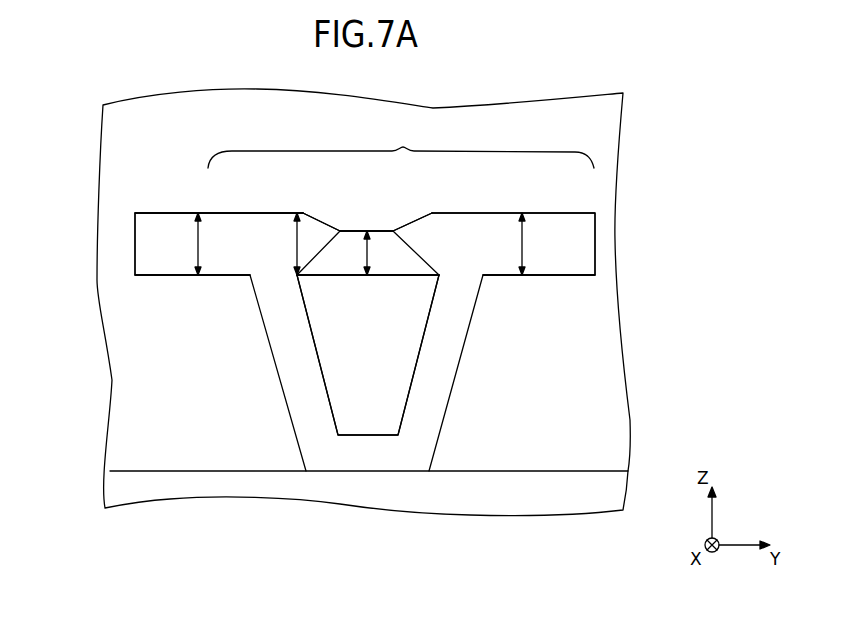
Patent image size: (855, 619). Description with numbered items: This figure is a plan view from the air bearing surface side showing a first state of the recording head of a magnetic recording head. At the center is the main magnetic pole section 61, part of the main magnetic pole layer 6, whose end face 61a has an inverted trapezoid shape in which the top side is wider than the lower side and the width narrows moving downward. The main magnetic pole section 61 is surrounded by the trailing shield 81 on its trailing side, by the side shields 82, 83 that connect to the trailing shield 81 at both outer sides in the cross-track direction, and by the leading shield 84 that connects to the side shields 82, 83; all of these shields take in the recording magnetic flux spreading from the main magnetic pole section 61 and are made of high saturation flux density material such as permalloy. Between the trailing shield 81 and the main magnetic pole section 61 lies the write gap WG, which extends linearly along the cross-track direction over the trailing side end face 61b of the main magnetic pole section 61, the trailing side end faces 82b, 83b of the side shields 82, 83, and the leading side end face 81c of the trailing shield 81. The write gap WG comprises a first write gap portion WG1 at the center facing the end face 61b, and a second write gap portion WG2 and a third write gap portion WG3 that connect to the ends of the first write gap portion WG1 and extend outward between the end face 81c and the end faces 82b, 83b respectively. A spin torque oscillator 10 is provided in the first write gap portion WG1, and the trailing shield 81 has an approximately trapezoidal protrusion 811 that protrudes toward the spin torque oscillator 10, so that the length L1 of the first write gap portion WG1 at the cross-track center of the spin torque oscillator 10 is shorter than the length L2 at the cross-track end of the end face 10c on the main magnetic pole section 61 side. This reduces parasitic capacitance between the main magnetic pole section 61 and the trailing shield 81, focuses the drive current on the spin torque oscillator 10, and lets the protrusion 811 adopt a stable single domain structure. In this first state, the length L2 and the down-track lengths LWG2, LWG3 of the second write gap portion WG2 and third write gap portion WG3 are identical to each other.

The trailing shield 81 is at (606, 151).
The leading side end face of trailing shield 81c is at (182, 213).
The side shield 82 is at (156, 382).
The trailing side end face of side shield 82b is at (184, 276).
The side shield 83 is at (617, 382).
The trailing side end face of side shield 83b is at (531, 277).
The leading shield 84 is at (458, 508).
The main magnetic pole layer 6 is at (288, 355).
The main magnetic pole section 61 is at (316, 353).
The end face of main magnetic pole section 61a is at (367, 367).
The trailing side end face of main magnetic pole section 61b is at (351, 275).
The spin torque oscillator 10 is at (418, 268).
The end face of spin torque oscillator 10c is at (413, 277).
The protrusion 811 is at (360, 227).
The write gap WG is at (401, 146).
The first write gap portion WG1 is at (425, 248).
The second write gap portion WG2 is at (221, 246).
The third write gap portion WG3 is at (575, 245).
The length L1 is at (374, 253).
The length L2 is at (296, 252).
The length LWG2 is at (180, 244).
The length LWG3 is at (540, 244).